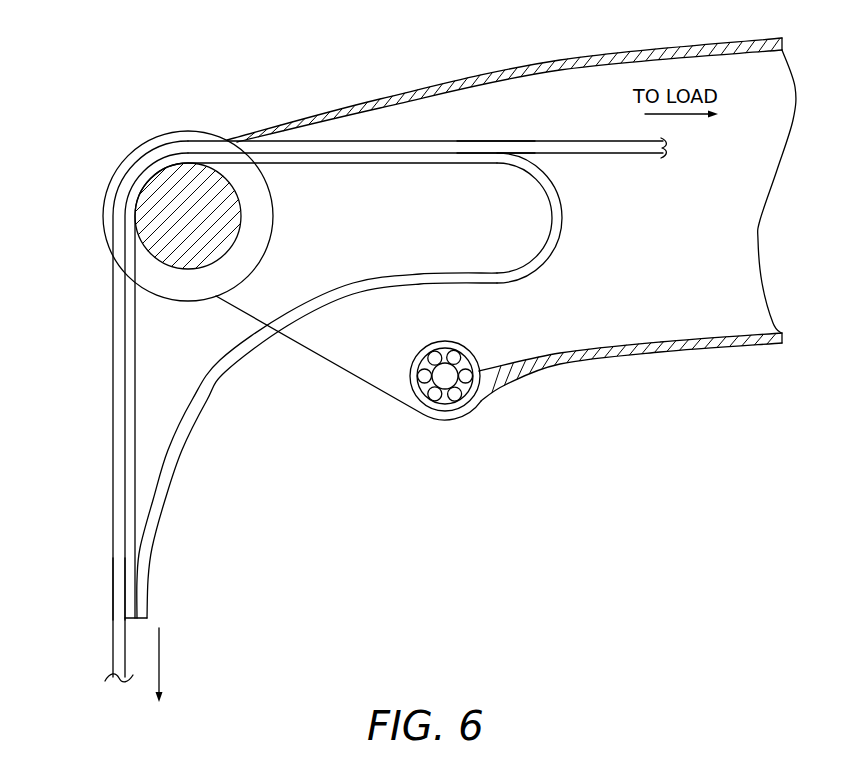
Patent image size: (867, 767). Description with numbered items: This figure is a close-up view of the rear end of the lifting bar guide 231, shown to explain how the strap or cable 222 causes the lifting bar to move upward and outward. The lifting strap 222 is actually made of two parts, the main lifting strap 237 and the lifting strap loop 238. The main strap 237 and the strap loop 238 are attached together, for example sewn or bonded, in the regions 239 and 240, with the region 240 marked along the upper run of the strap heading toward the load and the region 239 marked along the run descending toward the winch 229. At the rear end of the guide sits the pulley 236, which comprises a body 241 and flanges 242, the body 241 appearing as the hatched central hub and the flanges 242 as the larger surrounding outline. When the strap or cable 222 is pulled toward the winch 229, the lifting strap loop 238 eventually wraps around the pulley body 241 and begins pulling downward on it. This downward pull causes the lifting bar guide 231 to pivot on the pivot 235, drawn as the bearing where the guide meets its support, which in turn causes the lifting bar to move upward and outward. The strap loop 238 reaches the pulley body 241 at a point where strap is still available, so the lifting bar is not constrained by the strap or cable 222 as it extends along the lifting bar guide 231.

The lifting strap 222 is at (175, 582).
The winch 229 is at (213, 665).
The lifting bar guide 231 is at (490, 74).
The pivot 235 is at (446, 380).
The pulley 236 is at (146, 113).
The main lifting strap 237 is at (615, 148).
The lifting strap loop 238 is at (557, 215).
The attachment region 239 is at (110, 558).
The attachment region 240 is at (535, 140).
The pulley body 241 is at (243, 199).
The flanges 242 is at (274, 228).